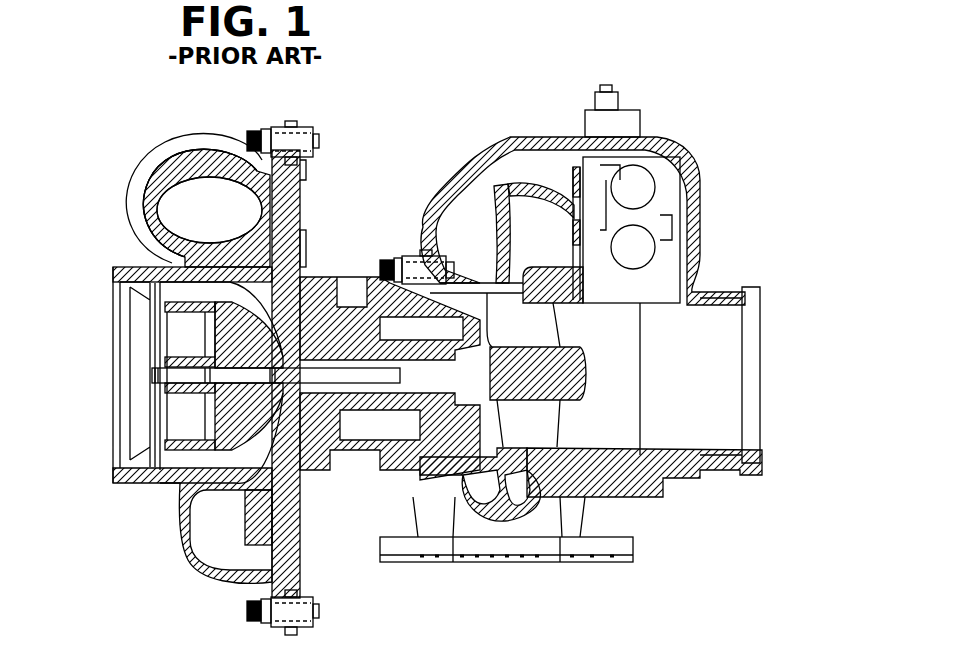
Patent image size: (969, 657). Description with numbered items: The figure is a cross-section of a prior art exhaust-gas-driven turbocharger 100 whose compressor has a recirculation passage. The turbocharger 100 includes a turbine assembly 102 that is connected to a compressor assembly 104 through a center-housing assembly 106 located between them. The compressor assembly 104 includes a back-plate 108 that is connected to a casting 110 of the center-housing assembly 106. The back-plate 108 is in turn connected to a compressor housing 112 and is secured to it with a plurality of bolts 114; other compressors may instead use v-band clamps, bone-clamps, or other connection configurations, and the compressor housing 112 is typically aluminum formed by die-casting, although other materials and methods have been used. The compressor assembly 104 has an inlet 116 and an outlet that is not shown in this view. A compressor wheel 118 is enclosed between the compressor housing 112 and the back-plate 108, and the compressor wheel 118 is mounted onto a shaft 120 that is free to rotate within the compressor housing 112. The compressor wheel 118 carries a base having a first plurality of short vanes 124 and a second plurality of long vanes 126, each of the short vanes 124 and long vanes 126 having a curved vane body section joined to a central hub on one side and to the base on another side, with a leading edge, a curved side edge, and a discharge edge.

The turbocharger 100 is at (772, 503).
The turbine assembly 102 is at (700, 127).
The compressor assembly 104 is at (166, 130).
The center-housing assembly 106 is at (395, 202).
The back-plate 108 is at (307, 567).
The casting 110 is at (323, 268).
The compressor housing 112 is at (198, 565).
The bolts 114 is at (313, 135).
The inlet 116 is at (100, 398).
The compressor wheel 118 is at (219, 368).
The shaft 120 is at (208, 375).
The short vanes 124 is at (232, 421).
The long vanes 126 is at (215, 332).